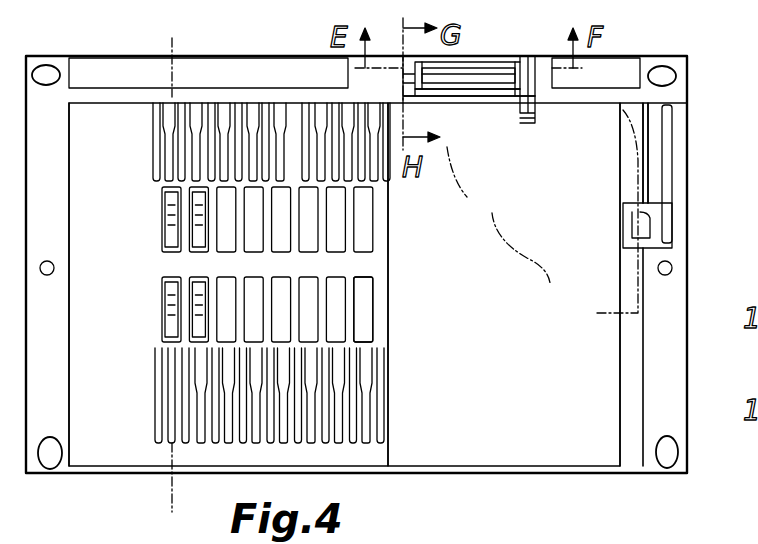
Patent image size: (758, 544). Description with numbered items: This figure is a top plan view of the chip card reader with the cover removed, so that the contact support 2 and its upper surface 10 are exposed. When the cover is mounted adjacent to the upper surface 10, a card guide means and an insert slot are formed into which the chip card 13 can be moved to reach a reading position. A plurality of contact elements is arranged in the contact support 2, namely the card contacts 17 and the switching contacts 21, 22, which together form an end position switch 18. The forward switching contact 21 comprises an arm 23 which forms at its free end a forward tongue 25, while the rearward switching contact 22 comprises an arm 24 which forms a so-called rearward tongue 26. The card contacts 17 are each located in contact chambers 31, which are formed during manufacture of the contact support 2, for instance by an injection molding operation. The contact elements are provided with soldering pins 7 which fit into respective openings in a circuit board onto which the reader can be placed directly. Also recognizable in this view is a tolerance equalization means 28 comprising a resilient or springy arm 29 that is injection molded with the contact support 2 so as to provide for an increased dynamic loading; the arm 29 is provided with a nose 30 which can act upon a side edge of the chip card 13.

The contact support 2 is at (663, 290).
The soldering pins 7 is at (135, 506).
The upper surface 10 is at (103, 446).
The chip card 13 is at (597, 313).
The card contacts 17 is at (197, 322).
The end position switch 18 is at (470, 157).
The forward switching contact 21 is at (493, 107).
The rearward switching contact 22 is at (497, 60).
The arm 23 is at (467, 103).
The arm 24 is at (468, 57).
The forward tongue 25 is at (532, 124).
The rearward tongue 26 is at (527, 80).
The tolerance equalization means 28 is at (646, 170).
The resilient arm 29 is at (657, 172).
The nose 30 is at (643, 215).
The contact chambers 31 is at (370, 308).